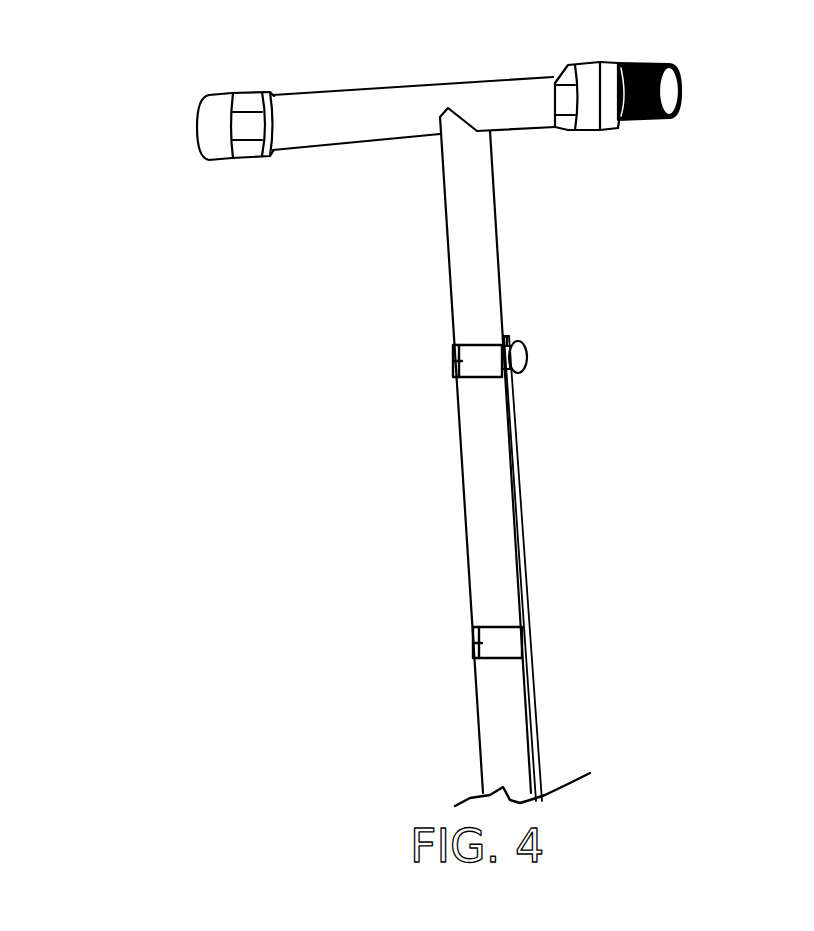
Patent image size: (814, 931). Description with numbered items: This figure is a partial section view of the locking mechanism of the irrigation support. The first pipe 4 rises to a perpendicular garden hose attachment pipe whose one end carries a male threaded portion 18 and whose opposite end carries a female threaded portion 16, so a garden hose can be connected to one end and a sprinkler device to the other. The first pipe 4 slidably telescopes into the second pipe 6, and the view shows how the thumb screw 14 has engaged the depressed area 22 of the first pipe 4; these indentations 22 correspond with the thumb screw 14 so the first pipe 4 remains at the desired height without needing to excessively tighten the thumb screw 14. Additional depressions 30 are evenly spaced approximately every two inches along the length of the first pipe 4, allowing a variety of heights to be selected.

The first pipe 4 is at (482, 276).
The second pipe 6 is at (530, 564).
The thumb screw 14 is at (525, 353).
The female threaded portion 16 is at (690, 95).
The male threaded portion 18 is at (183, 128).
The indentations 22 is at (453, 360).
The additional depressions 30 is at (478, 636).